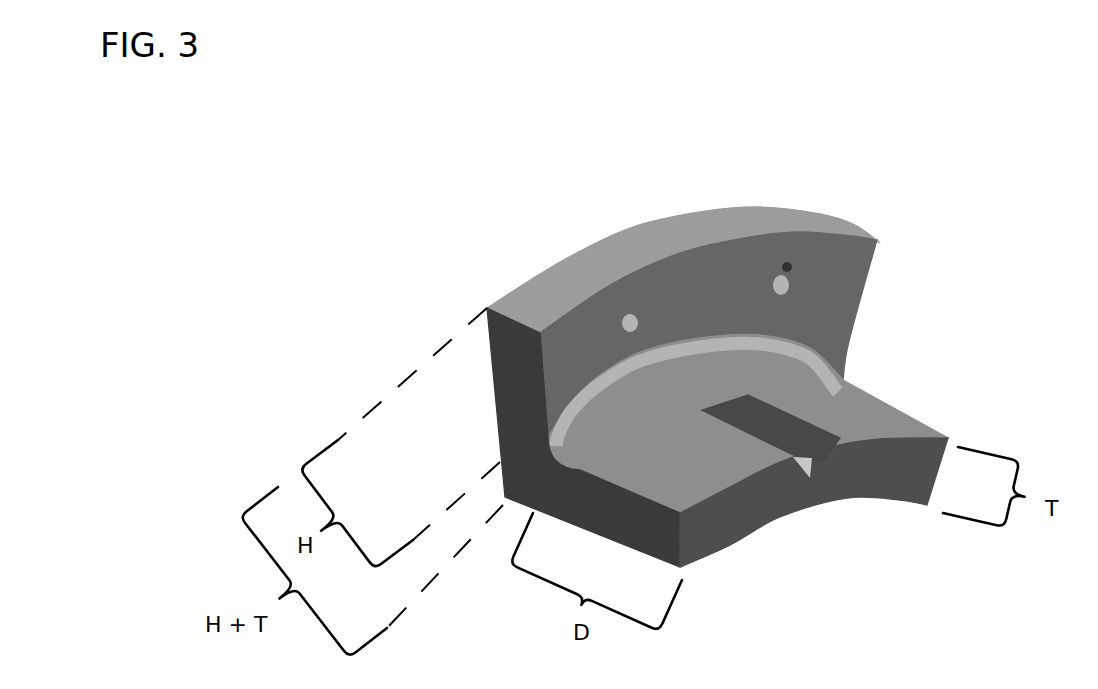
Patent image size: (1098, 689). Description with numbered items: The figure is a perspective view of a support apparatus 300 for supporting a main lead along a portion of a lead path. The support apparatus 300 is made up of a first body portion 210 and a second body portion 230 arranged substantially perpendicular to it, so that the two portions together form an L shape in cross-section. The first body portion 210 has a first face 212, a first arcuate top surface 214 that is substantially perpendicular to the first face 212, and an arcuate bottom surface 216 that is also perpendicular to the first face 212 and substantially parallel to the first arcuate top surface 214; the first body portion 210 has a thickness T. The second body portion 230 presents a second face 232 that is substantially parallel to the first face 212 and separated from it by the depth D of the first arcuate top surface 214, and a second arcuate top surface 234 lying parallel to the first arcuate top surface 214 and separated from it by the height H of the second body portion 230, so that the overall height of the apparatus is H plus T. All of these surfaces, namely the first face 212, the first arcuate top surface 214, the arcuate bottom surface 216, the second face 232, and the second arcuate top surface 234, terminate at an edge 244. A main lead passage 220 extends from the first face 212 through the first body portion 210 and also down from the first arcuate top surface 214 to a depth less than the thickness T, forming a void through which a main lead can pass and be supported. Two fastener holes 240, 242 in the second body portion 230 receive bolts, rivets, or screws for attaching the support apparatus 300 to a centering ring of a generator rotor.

The support apparatus 300 is at (689, 360).
The first body portion 210 is at (849, 479).
The first face 212 is at (730, 523).
The first arcuate top surface 214 is at (848, 423).
The arcuate bottom surface 216 is at (700, 567).
The main lead passage 220 is at (812, 466).
The second body portion 230 is at (680, 342).
The second face 232 is at (840, 285).
The second arcuate top surface 234 is at (778, 220).
The fastener hole 240 is at (790, 268).
The fastener hole 242 is at (629, 316).
The edge 244 is at (515, 403).